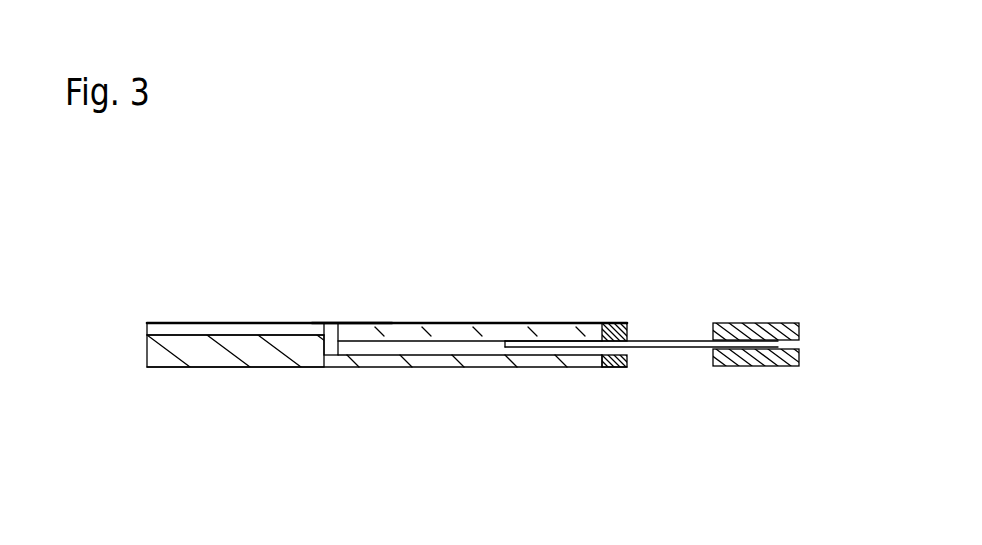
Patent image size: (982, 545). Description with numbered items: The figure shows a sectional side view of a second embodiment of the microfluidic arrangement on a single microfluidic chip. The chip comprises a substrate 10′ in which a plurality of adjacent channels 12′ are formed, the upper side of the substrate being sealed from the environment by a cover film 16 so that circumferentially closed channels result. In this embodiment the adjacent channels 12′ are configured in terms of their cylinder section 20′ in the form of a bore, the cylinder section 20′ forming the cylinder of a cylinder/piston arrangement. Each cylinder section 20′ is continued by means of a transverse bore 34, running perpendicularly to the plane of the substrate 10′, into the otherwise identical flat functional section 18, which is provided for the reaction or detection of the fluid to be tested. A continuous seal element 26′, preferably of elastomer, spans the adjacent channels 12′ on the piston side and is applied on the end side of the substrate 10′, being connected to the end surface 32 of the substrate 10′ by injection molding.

The substrate 10′ is at (243, 358).
The adjacent channels 12′ is at (391, 342).
The cover film 16 is at (446, 323).
The functional section 18 is at (233, 332).
The cylinder section 20′ is at (433, 352).
The seal element 26′ is at (617, 323).
The end surface 32 is at (604, 357).
The transverse bore 34 is at (335, 352).